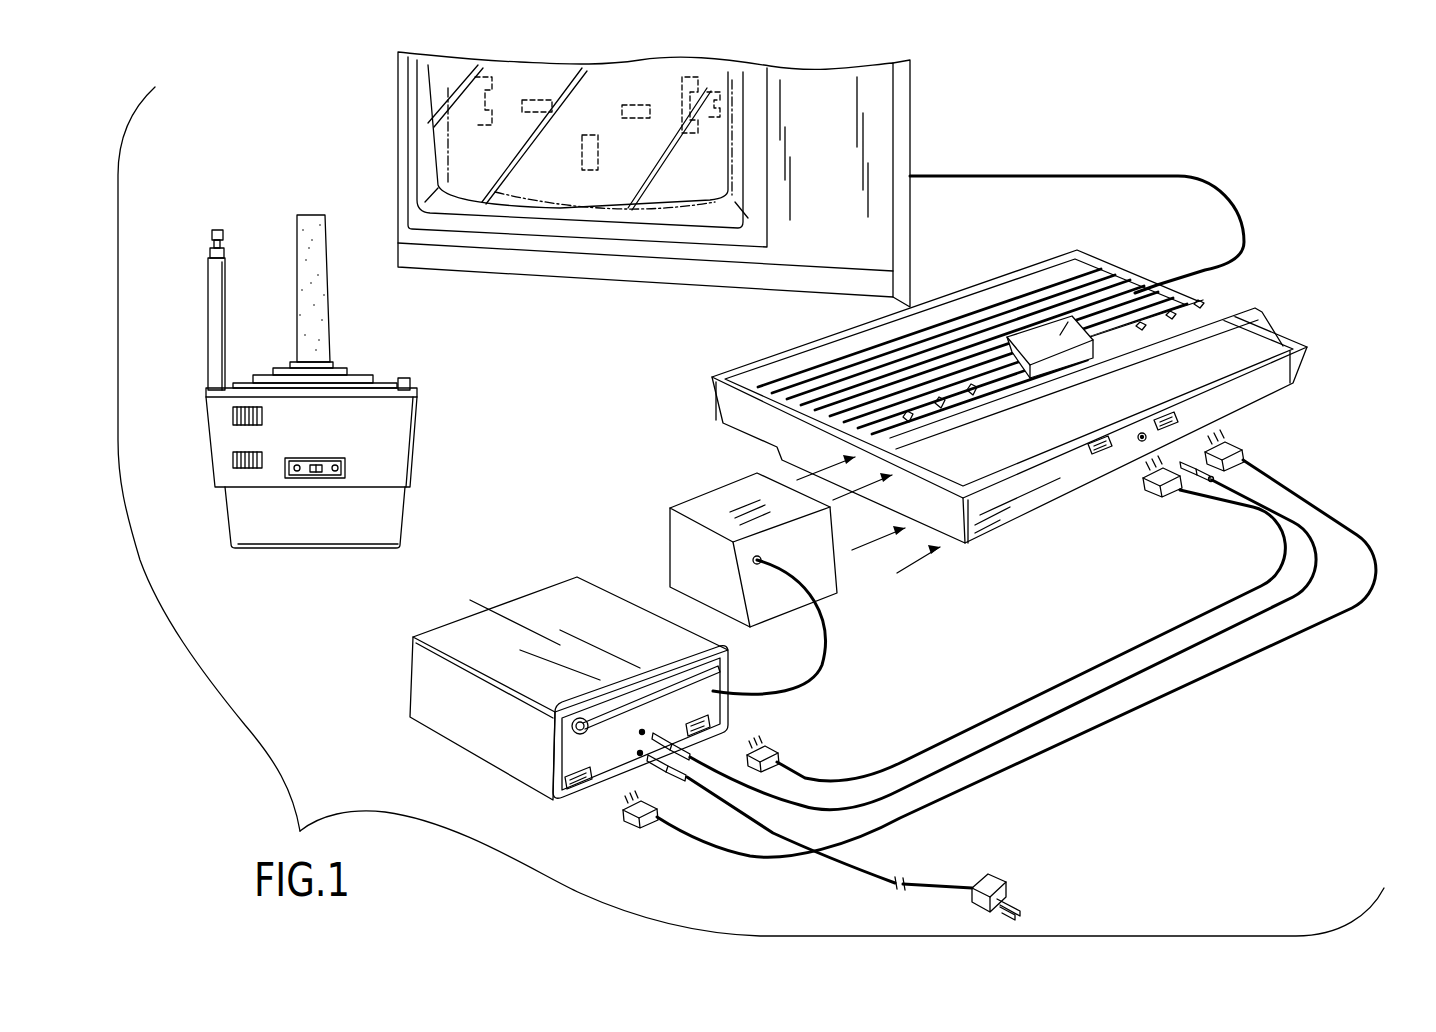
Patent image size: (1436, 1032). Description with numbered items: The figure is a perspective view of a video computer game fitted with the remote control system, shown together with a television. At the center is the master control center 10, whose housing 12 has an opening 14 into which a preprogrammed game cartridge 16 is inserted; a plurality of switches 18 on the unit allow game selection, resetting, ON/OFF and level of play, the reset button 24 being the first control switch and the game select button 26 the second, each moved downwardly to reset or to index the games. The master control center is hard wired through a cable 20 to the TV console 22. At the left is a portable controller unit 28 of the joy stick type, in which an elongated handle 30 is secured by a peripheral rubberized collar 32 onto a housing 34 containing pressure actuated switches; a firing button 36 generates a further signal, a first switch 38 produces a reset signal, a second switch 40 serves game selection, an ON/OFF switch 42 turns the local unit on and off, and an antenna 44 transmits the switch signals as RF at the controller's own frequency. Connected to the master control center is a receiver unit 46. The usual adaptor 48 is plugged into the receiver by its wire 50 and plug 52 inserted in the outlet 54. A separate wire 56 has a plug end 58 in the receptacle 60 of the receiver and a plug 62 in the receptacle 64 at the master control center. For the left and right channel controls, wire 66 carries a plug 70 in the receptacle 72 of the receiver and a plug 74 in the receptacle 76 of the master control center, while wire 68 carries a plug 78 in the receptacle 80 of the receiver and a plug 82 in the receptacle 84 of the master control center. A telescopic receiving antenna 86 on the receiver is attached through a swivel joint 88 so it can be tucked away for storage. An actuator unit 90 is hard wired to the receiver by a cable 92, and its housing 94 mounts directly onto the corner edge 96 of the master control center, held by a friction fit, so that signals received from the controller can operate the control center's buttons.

The master control center 10 is at (1004, 405).
The housing 12 is at (1020, 510).
The opening 14 is at (1103, 337).
The game cartridge 16 is at (1070, 320).
The switches 18 is at (1225, 305).
The cable 20 is at (1133, 175).
The TV console 22 is at (873, 138).
The reset button 24 is at (910, 420).
The game select button 26 is at (950, 398).
The portable controller unit 28 is at (330, 381).
The elongated handle 30 is at (328, 300).
The peripheral rubberized collar 32 is at (348, 366).
The housing 34 is at (236, 529).
The firing button 36 is at (410, 379).
The first switch 38 is at (233, 416).
The second switch 40 is at (233, 462).
The ON/OFF switch 42 is at (322, 460).
The antenna 44 is at (208, 292).
The receiver unit 46 is at (592, 656).
The adaptor 48 is at (1008, 879).
The wire 50 is at (843, 862).
The plug 52 is at (670, 771).
The outlet 54 is at (648, 730).
The wire 56 is at (1083, 700).
The plug end 58 is at (694, 757).
The receptacle 60 is at (637, 753).
The plug 62 is at (1205, 472).
The receptacle 64 is at (1140, 446).
The wire 66 is at (1061, 739).
The wire 68 is at (1126, 653).
The plug 70 is at (632, 818).
The receptacle 72 is at (553, 795).
The plug 74 is at (1243, 446).
The receptacle 76 is at (1188, 421).
The plug 78 is at (780, 757).
The receptacle 80 is at (712, 727).
The plug 82 is at (1160, 494).
The receptacle 84 is at (1100, 460).
The receiving antenna 86 is at (627, 705).
The swivel joint 88 is at (572, 731).
The actuator unit 90 is at (728, 517).
The cable 92 is at (828, 665).
The housing 94 is at (680, 540).
The corner edge 96 is at (952, 450).